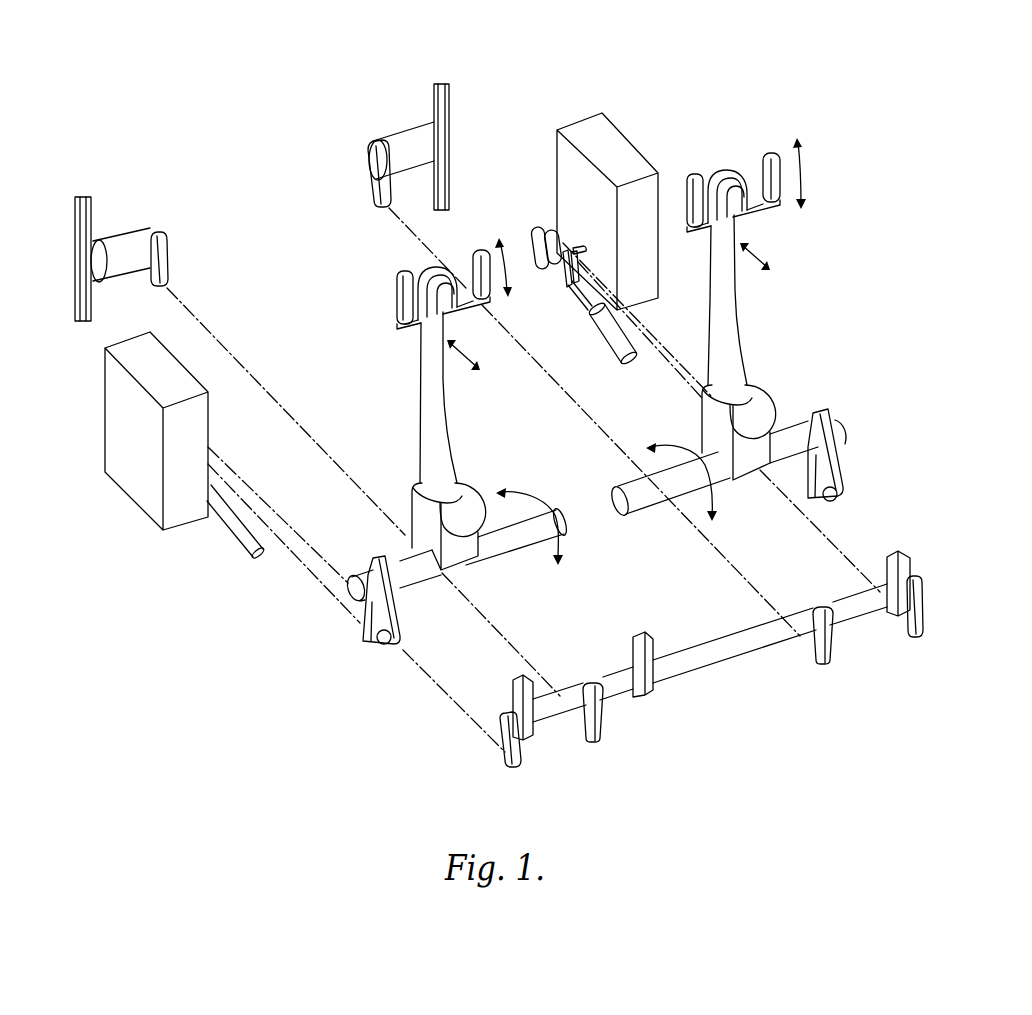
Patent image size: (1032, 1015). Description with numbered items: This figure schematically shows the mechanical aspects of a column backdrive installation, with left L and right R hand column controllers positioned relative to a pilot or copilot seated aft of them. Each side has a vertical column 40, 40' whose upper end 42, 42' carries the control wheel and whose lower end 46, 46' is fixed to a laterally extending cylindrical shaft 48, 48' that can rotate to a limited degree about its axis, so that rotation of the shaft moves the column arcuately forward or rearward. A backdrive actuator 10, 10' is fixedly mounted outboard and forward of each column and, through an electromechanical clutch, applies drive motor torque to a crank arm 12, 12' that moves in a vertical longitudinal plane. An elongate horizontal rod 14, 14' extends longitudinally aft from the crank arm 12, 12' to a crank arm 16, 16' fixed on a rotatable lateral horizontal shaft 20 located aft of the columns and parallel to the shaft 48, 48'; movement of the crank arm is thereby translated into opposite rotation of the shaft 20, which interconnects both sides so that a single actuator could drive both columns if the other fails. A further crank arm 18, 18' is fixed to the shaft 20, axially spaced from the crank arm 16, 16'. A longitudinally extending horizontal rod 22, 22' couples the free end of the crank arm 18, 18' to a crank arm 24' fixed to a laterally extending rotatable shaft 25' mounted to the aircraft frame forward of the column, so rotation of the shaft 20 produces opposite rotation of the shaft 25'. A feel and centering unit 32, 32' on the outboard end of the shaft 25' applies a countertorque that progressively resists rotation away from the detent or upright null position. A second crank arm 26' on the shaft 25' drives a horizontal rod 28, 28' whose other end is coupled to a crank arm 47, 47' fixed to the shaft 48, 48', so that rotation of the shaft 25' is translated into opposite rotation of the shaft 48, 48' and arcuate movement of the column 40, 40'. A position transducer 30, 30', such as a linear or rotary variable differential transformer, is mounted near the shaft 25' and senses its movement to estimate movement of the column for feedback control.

The left hand controller L is at (166, 154).
The right hand controller R is at (399, 68).
The backdrive actuator 10 is at (115, 255).
The backdrive actuator 10' is at (391, 145).
The crank arm 12 is at (191, 259).
The crank arm 12' is at (338, 173).
The elongate horizontal rod 14 is at (363, 492).
The elongate horizontal rod 14' is at (594, 422).
The crank arm 16 is at (622, 729).
The crank arm 16' is at (808, 660).
The crank arm 18 is at (536, 739).
The crank arm 18' is at (896, 621).
The shaft 20 is at (702, 657).
The horizontal rod 22 is at (356, 602).
The horizontal rod 22' is at (748, 427).
The crank arm 24' is at (517, 227).
The shaft 25' is at (556, 279).
The second crank arm 26' is at (519, 213).
The horizontal rod 28 is at (284, 543).
The horizontal rod 28' is at (637, 320).
The position transducer 30 is at (222, 532).
The position transducer 30' is at (596, 333).
The feel and centering unit 32 is at (140, 434).
The feel and centering unit 32' is at (584, 195).
The column 40 is at (393, 398).
The column 40' is at (713, 279).
The upper end 42 is at (454, 360).
The upper end 42' is at (746, 261).
The lower end 46 is at (516, 545).
The lower end 46' is at (698, 493).
The crank arm 47 is at (328, 637).
The crank arm 47' is at (866, 448).
The cylindrical shaft 48 is at (411, 600).
The cylindrical shaft 48' is at (808, 418).